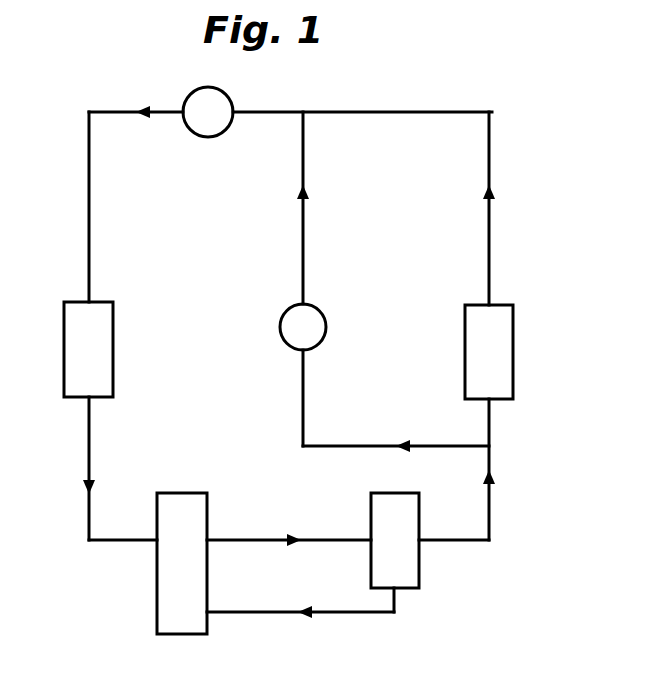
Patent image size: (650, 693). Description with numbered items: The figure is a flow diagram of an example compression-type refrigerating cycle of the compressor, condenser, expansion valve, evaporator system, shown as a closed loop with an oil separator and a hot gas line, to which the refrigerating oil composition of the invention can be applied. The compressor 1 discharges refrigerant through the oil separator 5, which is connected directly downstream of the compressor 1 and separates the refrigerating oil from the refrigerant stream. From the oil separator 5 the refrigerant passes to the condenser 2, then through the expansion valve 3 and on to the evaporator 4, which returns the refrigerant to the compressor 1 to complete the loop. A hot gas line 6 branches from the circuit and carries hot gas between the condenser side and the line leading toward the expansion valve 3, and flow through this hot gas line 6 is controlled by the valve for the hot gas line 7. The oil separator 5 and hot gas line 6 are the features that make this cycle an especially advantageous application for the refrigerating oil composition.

The compressor 1 is at (182, 563).
The condenser 2 is at (489, 352).
The expansion valve 3 is at (208, 112).
The evaporator 4 is at (88, 349).
The oil separator 5 is at (395, 540).
The hot gas line 6 is at (396, 419).
The valve for hot gas line 7 is at (303, 327).